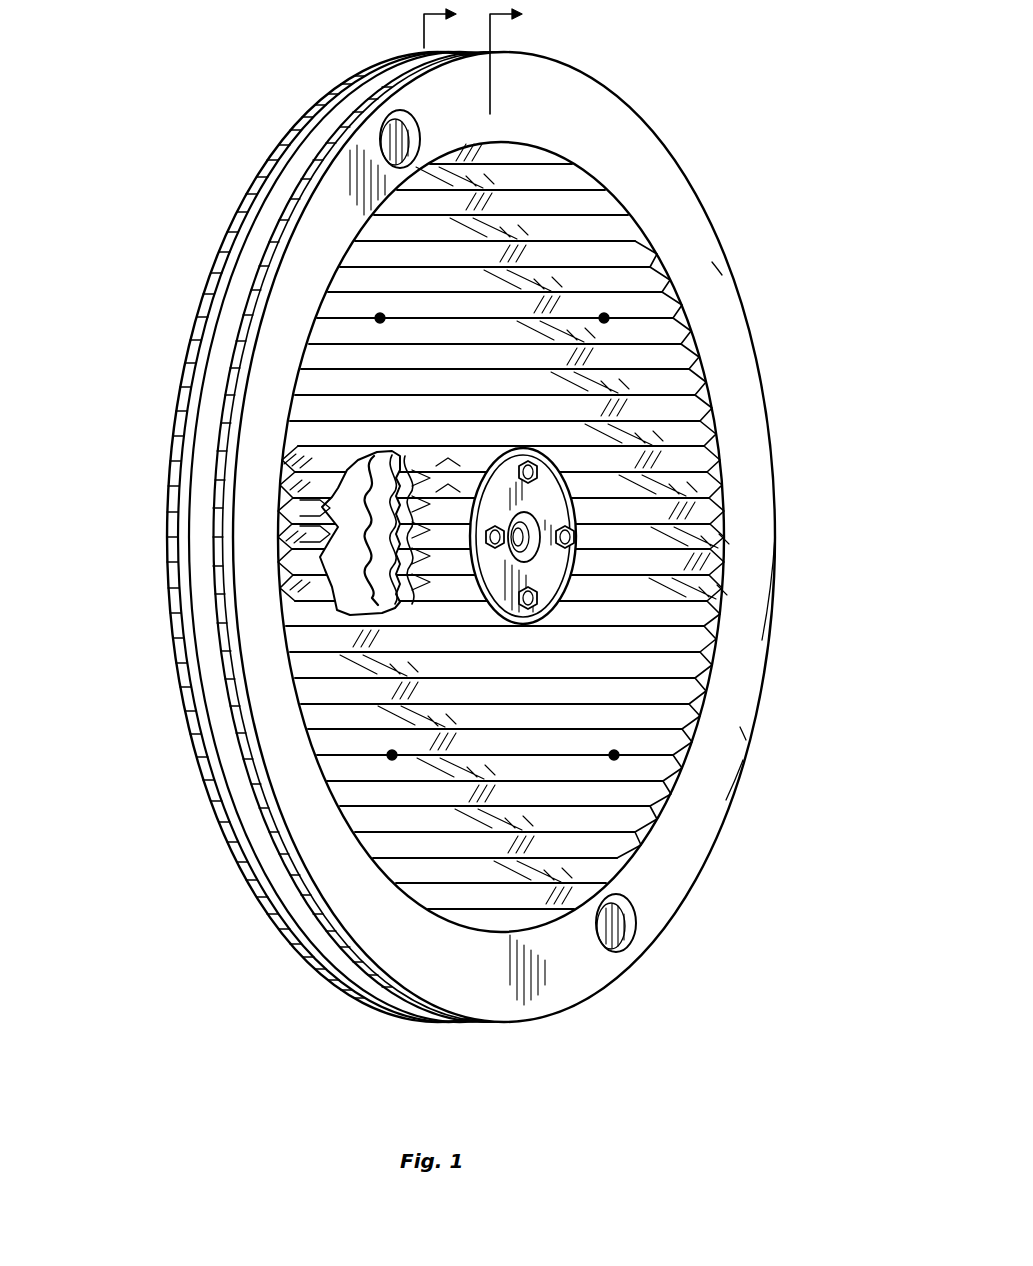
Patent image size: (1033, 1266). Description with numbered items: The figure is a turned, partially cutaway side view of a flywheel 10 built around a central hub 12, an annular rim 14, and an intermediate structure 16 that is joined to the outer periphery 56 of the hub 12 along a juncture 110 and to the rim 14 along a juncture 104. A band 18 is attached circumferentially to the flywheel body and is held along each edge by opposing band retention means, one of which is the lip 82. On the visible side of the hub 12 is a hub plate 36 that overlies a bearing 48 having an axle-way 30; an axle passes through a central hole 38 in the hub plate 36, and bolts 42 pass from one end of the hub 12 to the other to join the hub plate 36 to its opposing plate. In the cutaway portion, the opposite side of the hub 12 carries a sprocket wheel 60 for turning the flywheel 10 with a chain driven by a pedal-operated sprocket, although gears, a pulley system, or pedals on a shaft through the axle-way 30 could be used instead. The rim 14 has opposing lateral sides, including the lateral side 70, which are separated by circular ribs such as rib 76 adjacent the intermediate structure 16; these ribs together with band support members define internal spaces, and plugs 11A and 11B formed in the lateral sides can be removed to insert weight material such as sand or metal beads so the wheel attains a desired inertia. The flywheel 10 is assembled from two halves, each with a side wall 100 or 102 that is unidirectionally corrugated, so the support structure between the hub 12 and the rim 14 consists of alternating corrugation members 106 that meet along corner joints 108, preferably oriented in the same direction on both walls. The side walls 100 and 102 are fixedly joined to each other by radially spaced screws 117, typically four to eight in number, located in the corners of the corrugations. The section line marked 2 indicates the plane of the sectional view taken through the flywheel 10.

The section line 2- 2 is at (483, 58).
The flywheel 10 is at (686, 122).
The plug 11A is at (413, 108).
The plug 11B is at (636, 925).
The central hub 12 is at (467, 613).
The annular rim 14 is at (735, 770).
The intermediate structure 16 is at (660, 248).
The band 18 is at (205, 466).
The axle-way 30 is at (550, 557).
The hub plate 36 is at (550, 493).
The central hole 38 is at (537, 520).
The bolts 42 is at (573, 543).
The bearing 48 is at (490, 668).
The outer periphery 56 is at (487, 447).
The sprocket wheel 60 is at (357, 553).
The lateral side 70 is at (720, 257).
The circular rib 76 is at (803, 611).
The lip 82 is at (233, 847).
The side wall 100 is at (630, 792).
The side wall 102 is at (320, 522).
The juncture 104 is at (710, 610).
The corrugation members 106 is at (337, 768).
The joints 108 is at (625, 830).
The juncture 110 is at (490, 440).
The screws 117 is at (606, 318).